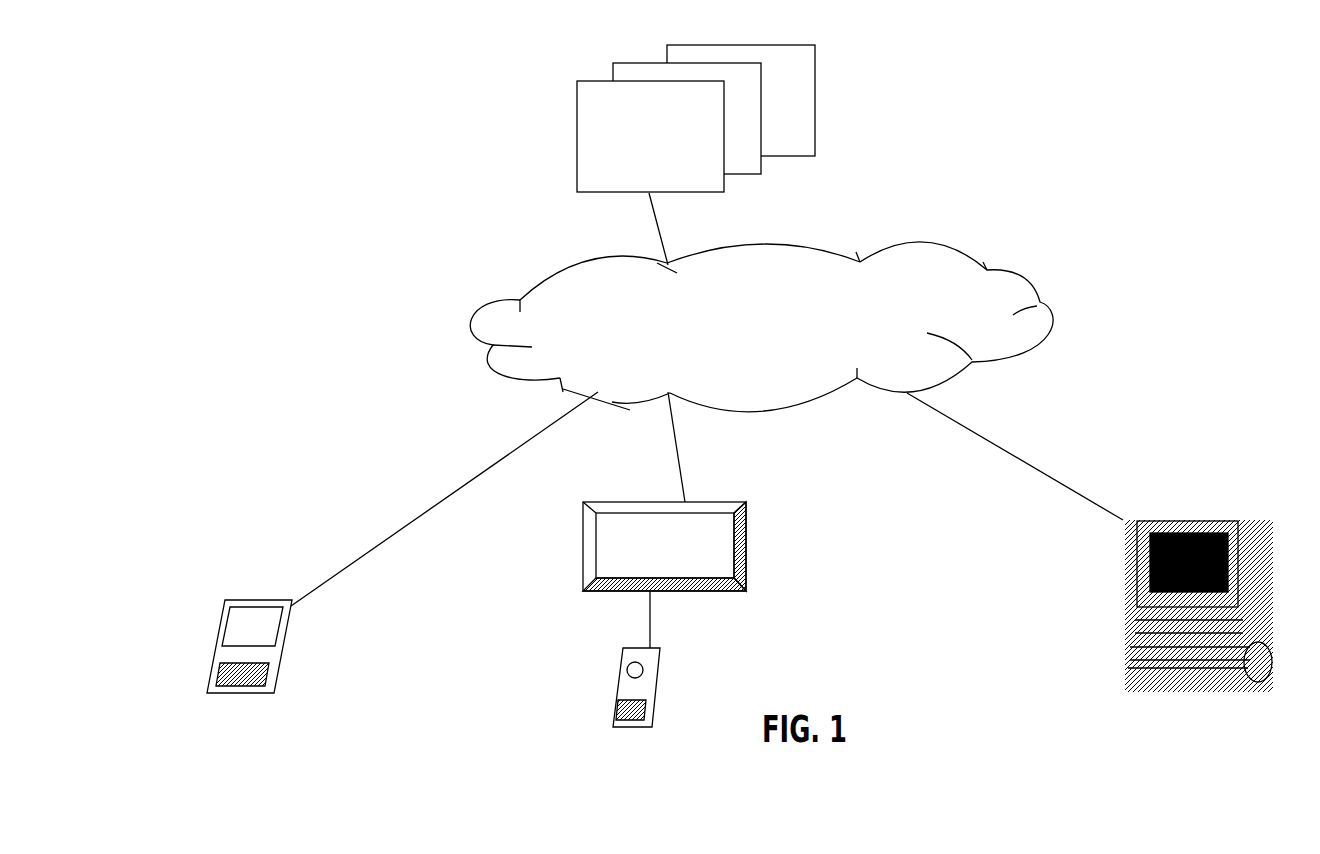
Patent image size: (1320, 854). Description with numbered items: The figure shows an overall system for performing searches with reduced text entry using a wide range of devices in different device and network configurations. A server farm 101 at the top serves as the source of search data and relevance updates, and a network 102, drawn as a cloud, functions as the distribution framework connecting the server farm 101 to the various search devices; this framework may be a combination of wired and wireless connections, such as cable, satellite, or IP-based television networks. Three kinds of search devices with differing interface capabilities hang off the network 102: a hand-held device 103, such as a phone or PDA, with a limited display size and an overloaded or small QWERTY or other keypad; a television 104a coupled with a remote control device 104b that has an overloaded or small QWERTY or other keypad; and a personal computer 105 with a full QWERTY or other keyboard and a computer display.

The server farm 101 is at (628, 144).
The network 102 is at (810, 332).
The hand-held device 103 is at (268, 610).
The television 104a is at (593, 552).
The remote control device 104b is at (623, 672).
The personal computer 105 is at (1215, 518).